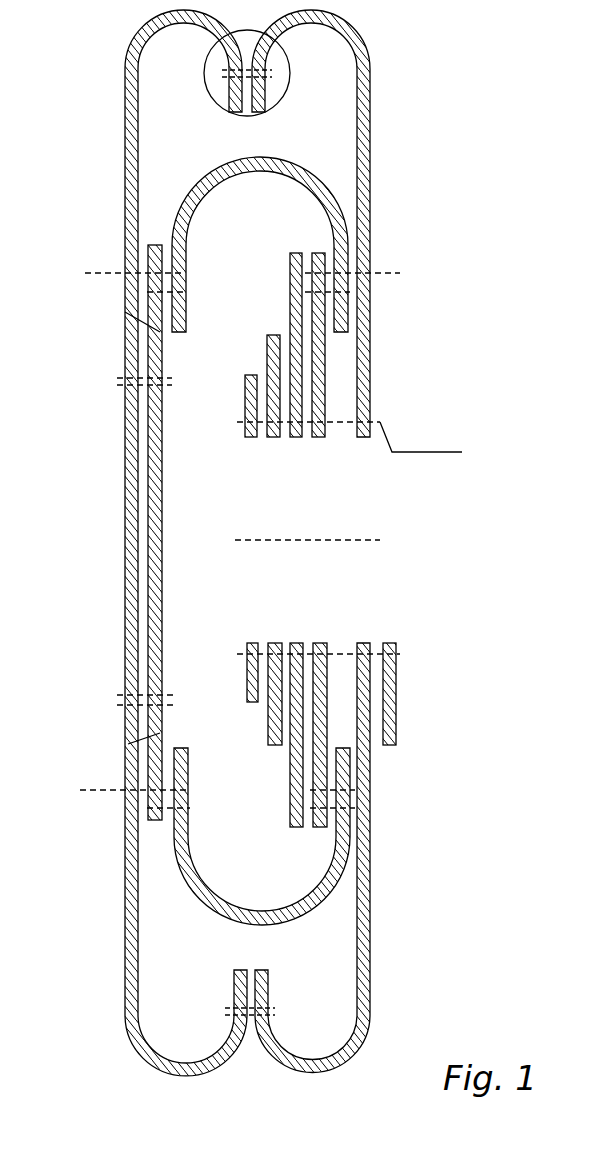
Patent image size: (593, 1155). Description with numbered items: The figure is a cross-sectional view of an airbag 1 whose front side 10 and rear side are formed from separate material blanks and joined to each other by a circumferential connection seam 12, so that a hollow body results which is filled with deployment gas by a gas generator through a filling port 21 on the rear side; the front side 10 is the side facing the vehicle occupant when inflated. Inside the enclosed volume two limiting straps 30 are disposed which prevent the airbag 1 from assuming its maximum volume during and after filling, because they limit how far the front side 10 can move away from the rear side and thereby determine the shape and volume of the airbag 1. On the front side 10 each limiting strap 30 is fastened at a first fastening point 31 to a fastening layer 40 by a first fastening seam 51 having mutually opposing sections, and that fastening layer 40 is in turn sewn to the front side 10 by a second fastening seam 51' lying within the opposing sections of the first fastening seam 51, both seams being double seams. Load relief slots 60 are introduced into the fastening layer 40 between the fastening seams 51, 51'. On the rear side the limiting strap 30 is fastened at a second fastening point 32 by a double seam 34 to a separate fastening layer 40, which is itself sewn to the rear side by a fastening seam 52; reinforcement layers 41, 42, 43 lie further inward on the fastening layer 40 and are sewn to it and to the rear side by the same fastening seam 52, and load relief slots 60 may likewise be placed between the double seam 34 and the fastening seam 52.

The airbag 1 is at (416, 72).
The front side 10 is at (146, 543).
The connection seam 12 is at (262, 72).
The filling port 21 is at (393, 517).
The limiting strap 30 is at (187, 246).
The first fastening point 31 is at (102, 333).
The second fastening point 32 is at (394, 352).
The double seam 34 is at (190, 292).
The fastening layer 40 is at (163, 597).
The reinforcement layer 41 is at (293, 438).
The reinforcement layer 42 is at (275, 643).
The reinforcement layer 43 is at (250, 438).
The first fastening seam 51 is at (198, 534).
The second fastening seam 51' is at (114, 541).
The fastening seam 52 is at (398, 653).
The load relief slot 60 is at (125, 312).